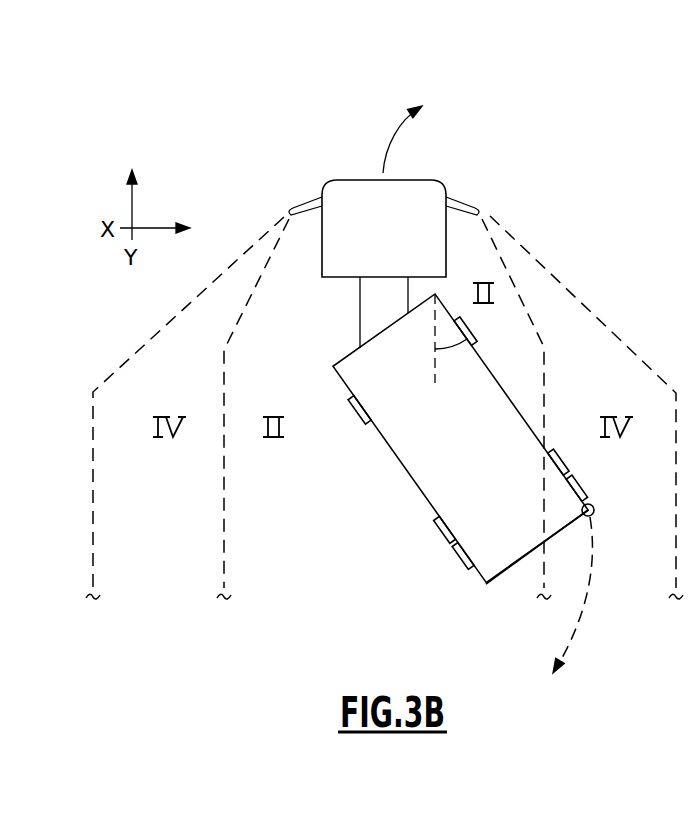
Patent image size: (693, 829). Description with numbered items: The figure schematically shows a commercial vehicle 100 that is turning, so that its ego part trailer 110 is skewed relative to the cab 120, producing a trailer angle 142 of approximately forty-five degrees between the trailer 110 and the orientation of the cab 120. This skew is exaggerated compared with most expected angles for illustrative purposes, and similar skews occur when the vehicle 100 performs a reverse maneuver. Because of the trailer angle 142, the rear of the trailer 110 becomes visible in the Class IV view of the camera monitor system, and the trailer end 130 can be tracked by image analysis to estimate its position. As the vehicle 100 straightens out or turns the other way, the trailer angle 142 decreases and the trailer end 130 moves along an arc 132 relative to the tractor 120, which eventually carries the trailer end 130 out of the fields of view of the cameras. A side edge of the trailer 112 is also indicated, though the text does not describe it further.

The vehicle 100 is at (452, 167).
The trailer 110 is at (477, 441).
The rear side of base 112 is at (507, 570).
The cab 120 is at (408, 242).
The trailer end 130 is at (597, 511).
The arc 132 is at (585, 617).
The trailer angle 142 is at (447, 330).